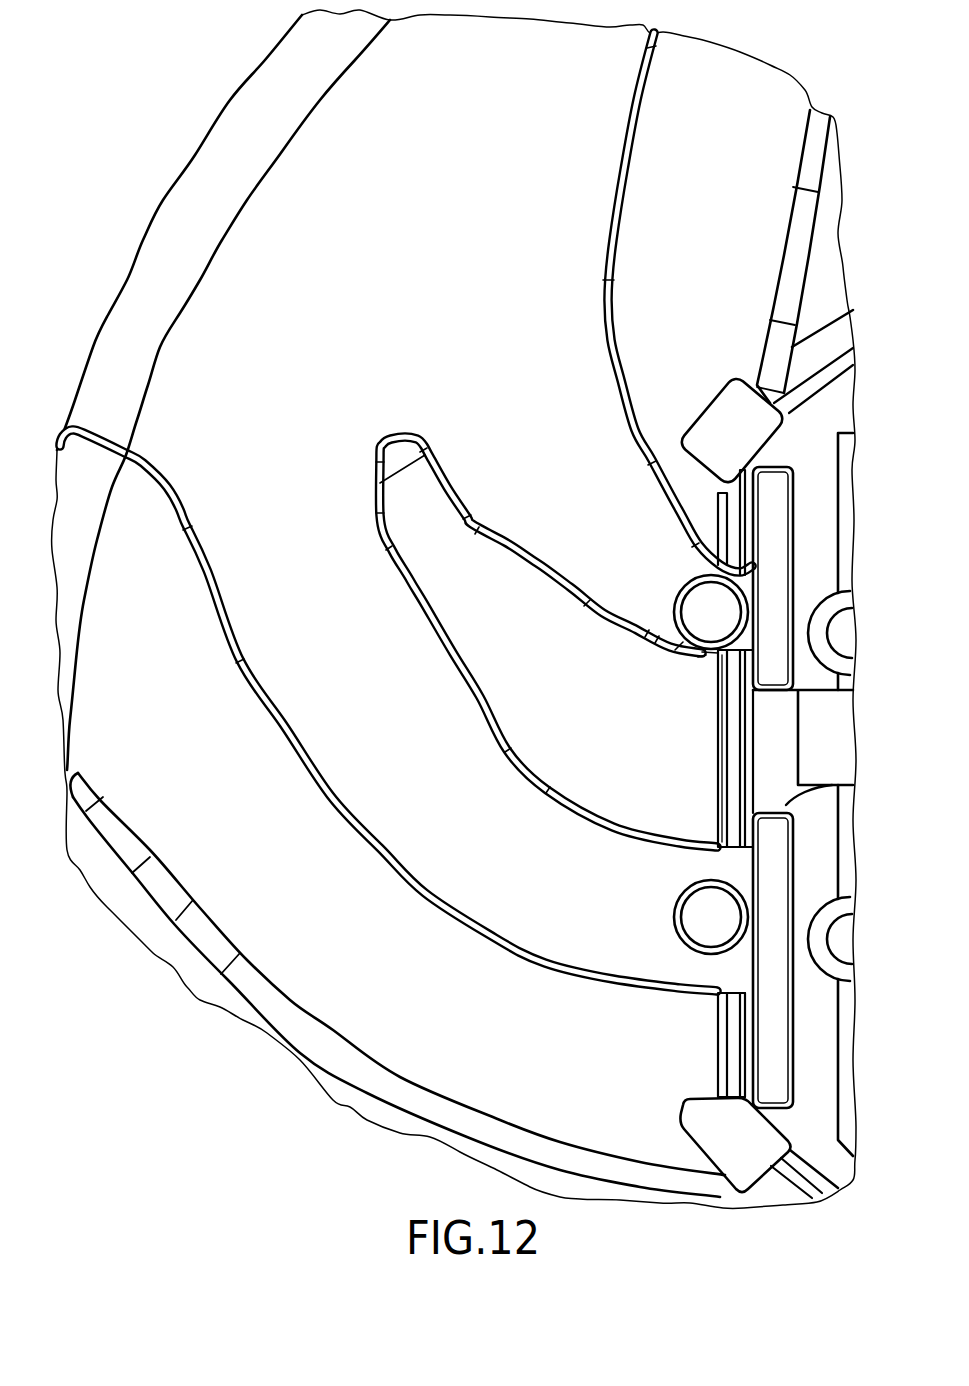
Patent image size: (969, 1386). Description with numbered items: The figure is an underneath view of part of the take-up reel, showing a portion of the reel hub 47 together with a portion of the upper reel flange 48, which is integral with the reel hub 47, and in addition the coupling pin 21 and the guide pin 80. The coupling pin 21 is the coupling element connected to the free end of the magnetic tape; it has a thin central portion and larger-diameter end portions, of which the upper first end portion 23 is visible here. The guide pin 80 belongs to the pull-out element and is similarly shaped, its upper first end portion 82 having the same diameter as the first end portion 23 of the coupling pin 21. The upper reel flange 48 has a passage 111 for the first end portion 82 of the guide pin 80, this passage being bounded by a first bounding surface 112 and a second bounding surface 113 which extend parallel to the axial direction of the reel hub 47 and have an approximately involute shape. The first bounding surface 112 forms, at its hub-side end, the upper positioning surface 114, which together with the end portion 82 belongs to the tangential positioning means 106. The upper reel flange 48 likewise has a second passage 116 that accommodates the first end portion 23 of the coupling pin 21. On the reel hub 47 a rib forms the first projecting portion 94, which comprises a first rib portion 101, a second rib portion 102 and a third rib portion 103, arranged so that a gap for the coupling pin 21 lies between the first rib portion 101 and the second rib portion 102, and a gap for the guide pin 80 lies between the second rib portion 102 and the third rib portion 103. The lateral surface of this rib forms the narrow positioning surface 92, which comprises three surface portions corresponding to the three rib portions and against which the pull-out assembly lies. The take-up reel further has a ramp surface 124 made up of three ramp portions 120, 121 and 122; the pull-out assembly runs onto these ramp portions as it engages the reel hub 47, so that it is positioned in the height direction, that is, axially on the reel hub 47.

The passage 111 is at (518, 397).
The first bounding surface 112 is at (562, 577).
The second bounding surface 113 is at (628, 424).
The second passage 116 is at (293, 545).
The upper reel flange 48 is at (297, 1066).
The reel hub 47 is at (848, 1182).
The first projecting portion 94 is at (742, 462).
The positioning surface 92 is at (733, 488).
The third rib portion 103 is at (717, 494).
The ramp portion 122 is at (733, 523).
The guide pin 80 is at (668, 598).
The first end portion 82 is at (703, 597).
The tangential positioning means 106 is at (670, 634).
The upper positioning surface 114 is at (697, 654).
The second rib portion 102 is at (757, 689).
The ramp surface 124 is at (733, 760).
The ramp portion 121 is at (733, 792).
The first end portion 23 is at (705, 895).
The coupling pin 21 is at (668, 922).
The first rib portion 101 is at (748, 1027).
The ramp portion 120 is at (730, 1070).